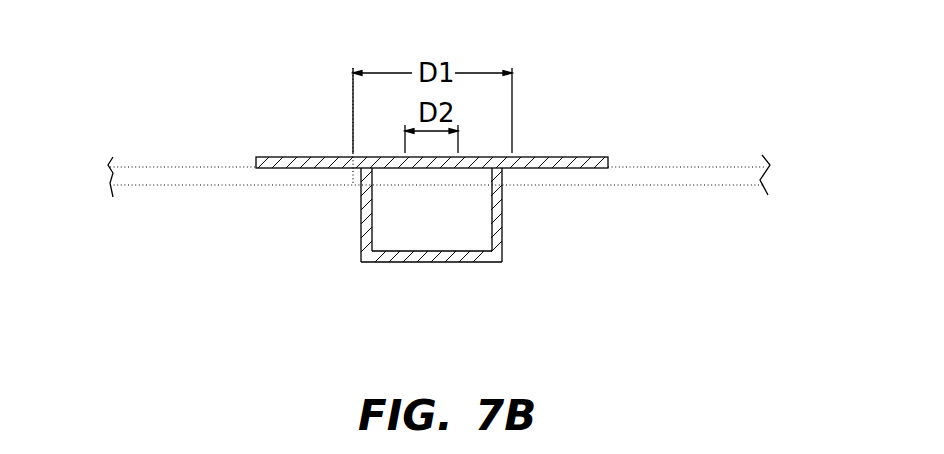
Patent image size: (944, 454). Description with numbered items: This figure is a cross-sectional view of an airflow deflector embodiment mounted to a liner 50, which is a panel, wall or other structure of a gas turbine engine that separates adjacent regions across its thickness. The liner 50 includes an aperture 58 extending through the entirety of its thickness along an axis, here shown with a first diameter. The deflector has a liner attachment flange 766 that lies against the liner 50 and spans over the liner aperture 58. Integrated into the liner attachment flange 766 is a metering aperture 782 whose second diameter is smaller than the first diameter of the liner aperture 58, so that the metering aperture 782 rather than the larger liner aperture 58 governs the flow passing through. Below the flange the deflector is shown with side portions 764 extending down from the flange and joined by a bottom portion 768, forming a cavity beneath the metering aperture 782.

The liner 50 is at (740, 167).
The aperture 58 is at (491, 175).
The side walls of pocket 764 is at (361, 235).
The liner attachment flange 766 is at (595, 157).
The bottom wall of pocket 768 is at (415, 262).
The metering aperture 782 is at (425, 169).